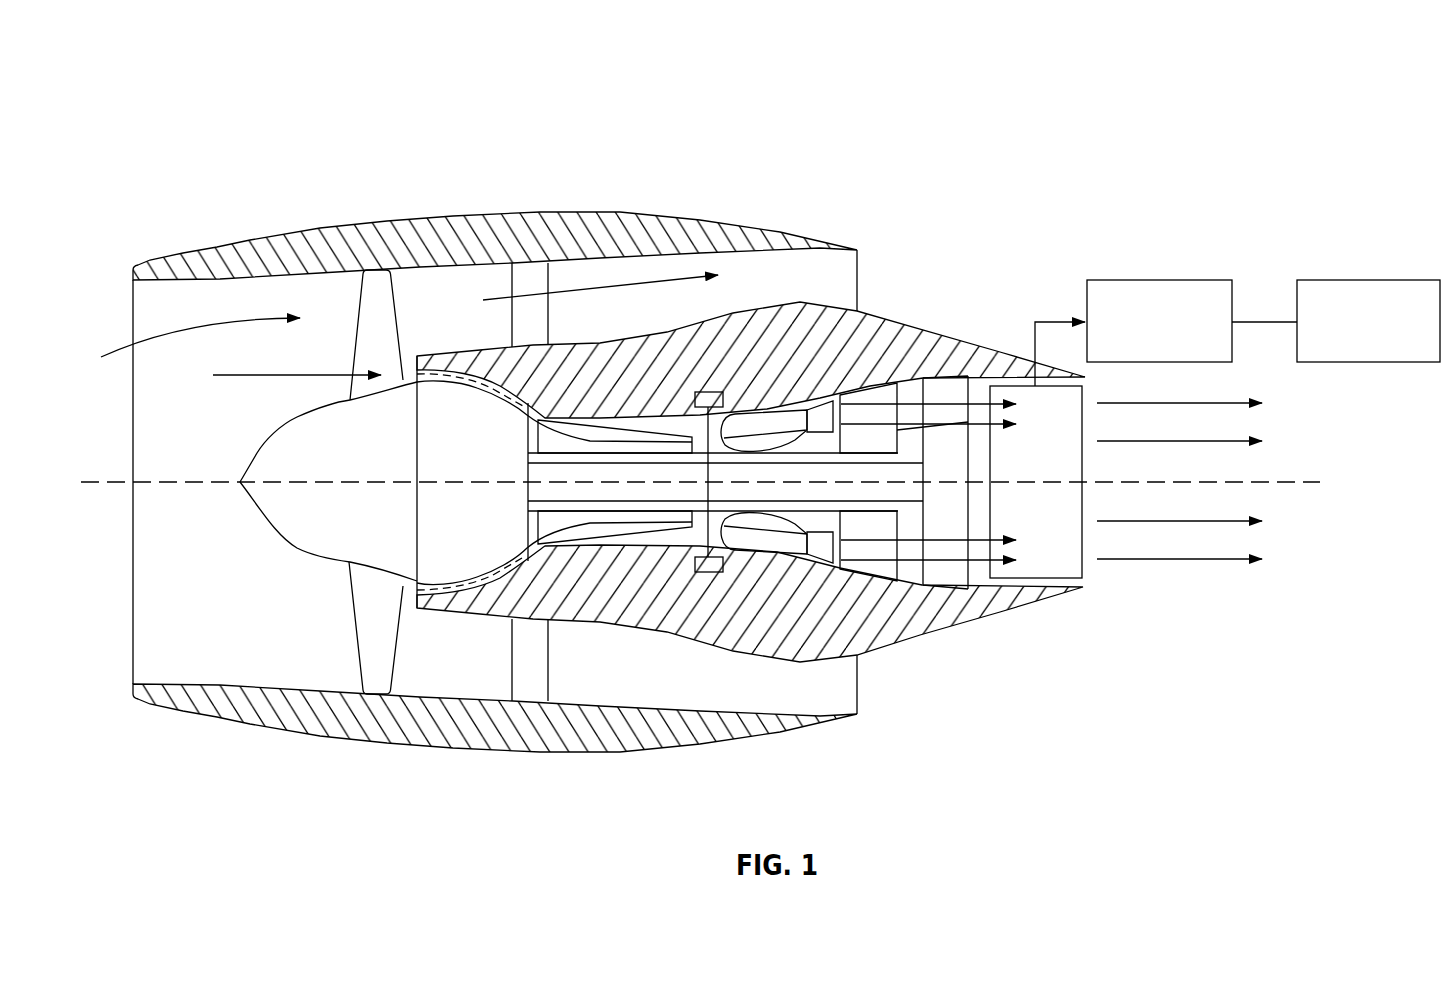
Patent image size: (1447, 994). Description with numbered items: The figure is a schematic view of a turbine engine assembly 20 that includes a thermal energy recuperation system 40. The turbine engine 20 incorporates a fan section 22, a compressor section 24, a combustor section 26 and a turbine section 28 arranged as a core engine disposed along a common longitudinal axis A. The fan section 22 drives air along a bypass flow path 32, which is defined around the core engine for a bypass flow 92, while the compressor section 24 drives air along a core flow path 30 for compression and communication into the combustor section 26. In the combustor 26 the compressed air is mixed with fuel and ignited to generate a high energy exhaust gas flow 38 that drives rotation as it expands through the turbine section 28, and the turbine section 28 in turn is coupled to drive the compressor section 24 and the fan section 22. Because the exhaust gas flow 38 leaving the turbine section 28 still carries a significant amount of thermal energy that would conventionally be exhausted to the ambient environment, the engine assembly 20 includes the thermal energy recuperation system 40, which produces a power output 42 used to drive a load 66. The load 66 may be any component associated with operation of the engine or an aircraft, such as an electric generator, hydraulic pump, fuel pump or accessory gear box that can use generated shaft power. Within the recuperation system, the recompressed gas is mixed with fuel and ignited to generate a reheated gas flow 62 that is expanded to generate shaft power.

The turbine engine assembly 20 is at (158, 110).
The fan section 22 is at (352, 679).
The compressor section 24 is at (583, 547).
The combustor section 26 is at (763, 555).
The turbine section 28 is at (842, 606).
The core flow path 30 is at (558, 432).
The bypass flow path 32 is at (444, 302).
The exhaust gas flow 38 is at (907, 402).
The thermal energy recuperation system 40 is at (1080, 437).
The power output 42 is at (1180, 281).
The reheated gas flow 62 is at (1173, 574).
The load 66 is at (1392, 281).
The bypass flow 92 is at (567, 437).
The longitudinal axis A is at (99, 485).